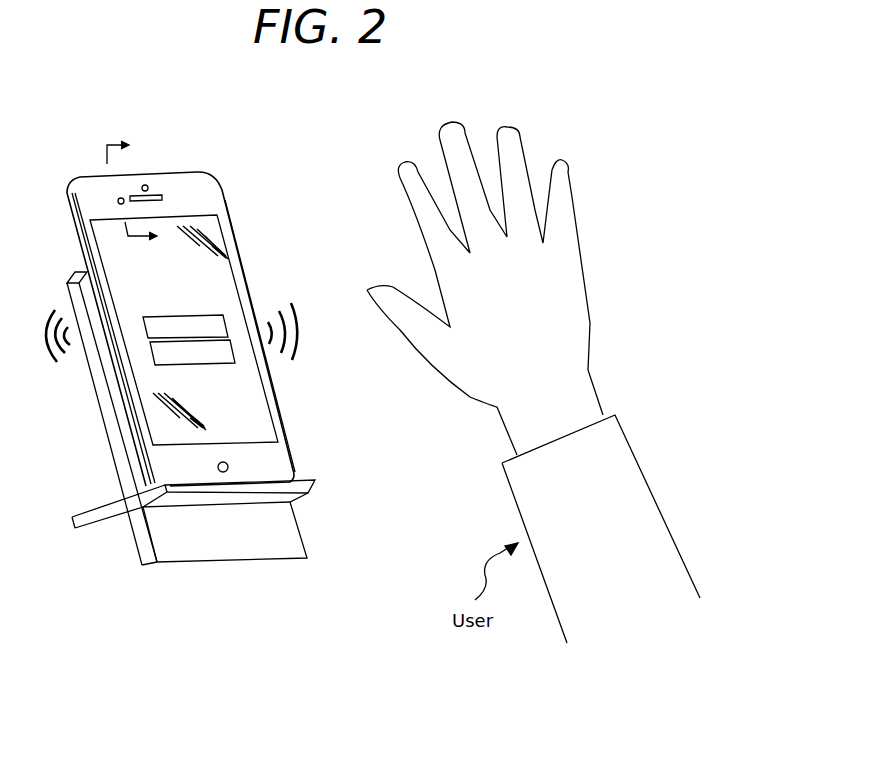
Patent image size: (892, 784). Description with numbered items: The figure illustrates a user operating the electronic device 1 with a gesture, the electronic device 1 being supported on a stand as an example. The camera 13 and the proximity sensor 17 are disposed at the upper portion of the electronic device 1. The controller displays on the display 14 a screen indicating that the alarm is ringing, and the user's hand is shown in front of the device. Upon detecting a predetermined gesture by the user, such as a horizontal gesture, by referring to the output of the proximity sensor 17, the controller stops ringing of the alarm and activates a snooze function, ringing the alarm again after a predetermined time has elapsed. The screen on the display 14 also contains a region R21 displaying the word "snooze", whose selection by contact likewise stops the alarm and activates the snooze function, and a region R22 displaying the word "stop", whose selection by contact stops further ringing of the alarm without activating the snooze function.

The electronic device 1 is at (250, 264).
The camera 13 is at (148, 185).
The proximity sensor 17 is at (119, 198).
The display 14 is at (160, 410).
The region displaying the word "snooze" R21 is at (223, 315).
The region displaying the word "stop" R22 is at (235, 358).